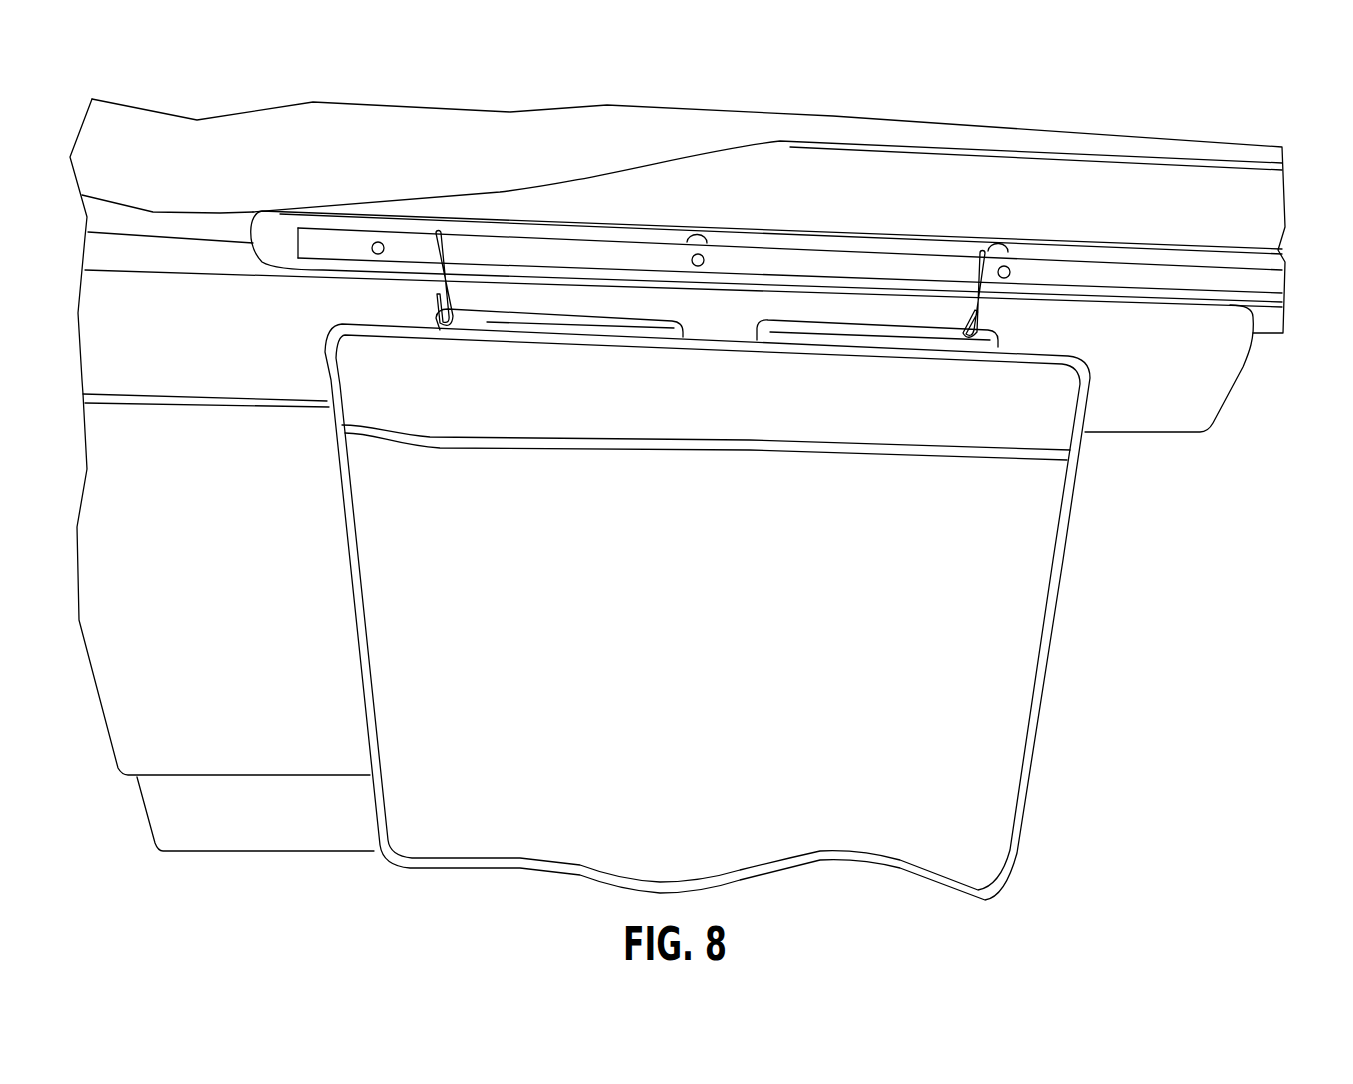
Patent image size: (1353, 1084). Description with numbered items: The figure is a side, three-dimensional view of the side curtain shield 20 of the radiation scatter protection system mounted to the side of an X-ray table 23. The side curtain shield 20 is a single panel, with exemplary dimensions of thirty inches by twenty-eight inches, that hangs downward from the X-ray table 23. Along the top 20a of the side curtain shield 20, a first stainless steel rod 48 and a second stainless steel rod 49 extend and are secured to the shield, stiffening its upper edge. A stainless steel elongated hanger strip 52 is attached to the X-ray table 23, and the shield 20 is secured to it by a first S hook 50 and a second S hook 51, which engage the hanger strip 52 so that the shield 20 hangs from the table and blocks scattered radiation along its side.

The side curtain shield 20 is at (995, 633).
The top of the side curtain shield 20a is at (643, 343).
The X-ray table 23 is at (1250, 283).
The first stainless steel rod 48 is at (547, 315).
The second stainless steel rod 49 is at (793, 327).
The first S hook 50 is at (445, 253).
The second S hook 51 is at (973, 277).
The elongated hanger strip 52 is at (830, 268).